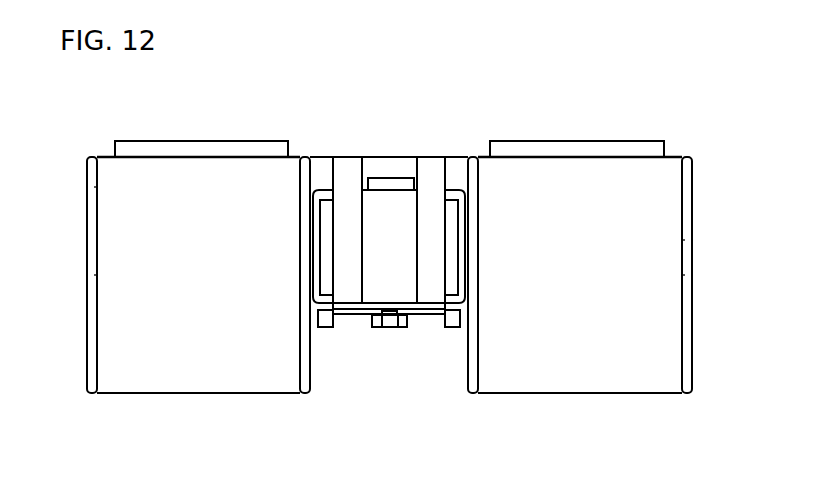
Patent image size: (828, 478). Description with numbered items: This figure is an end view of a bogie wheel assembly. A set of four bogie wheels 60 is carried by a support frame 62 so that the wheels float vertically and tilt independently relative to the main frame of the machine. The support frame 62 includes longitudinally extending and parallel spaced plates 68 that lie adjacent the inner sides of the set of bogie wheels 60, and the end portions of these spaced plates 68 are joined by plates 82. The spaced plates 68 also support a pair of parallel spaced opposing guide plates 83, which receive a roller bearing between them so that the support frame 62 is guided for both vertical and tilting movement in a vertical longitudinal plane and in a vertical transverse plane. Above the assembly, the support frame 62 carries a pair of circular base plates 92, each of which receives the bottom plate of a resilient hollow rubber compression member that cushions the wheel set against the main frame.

The bogie wheels 60 is at (192, 358).
The circular base plates 92 is at (237, 148).
The guide plates 83 is at (438, 177).
The spaced plates 68 is at (320, 242).
The plates 82 is at (393, 261).
The support frame 62 is at (393, 343).